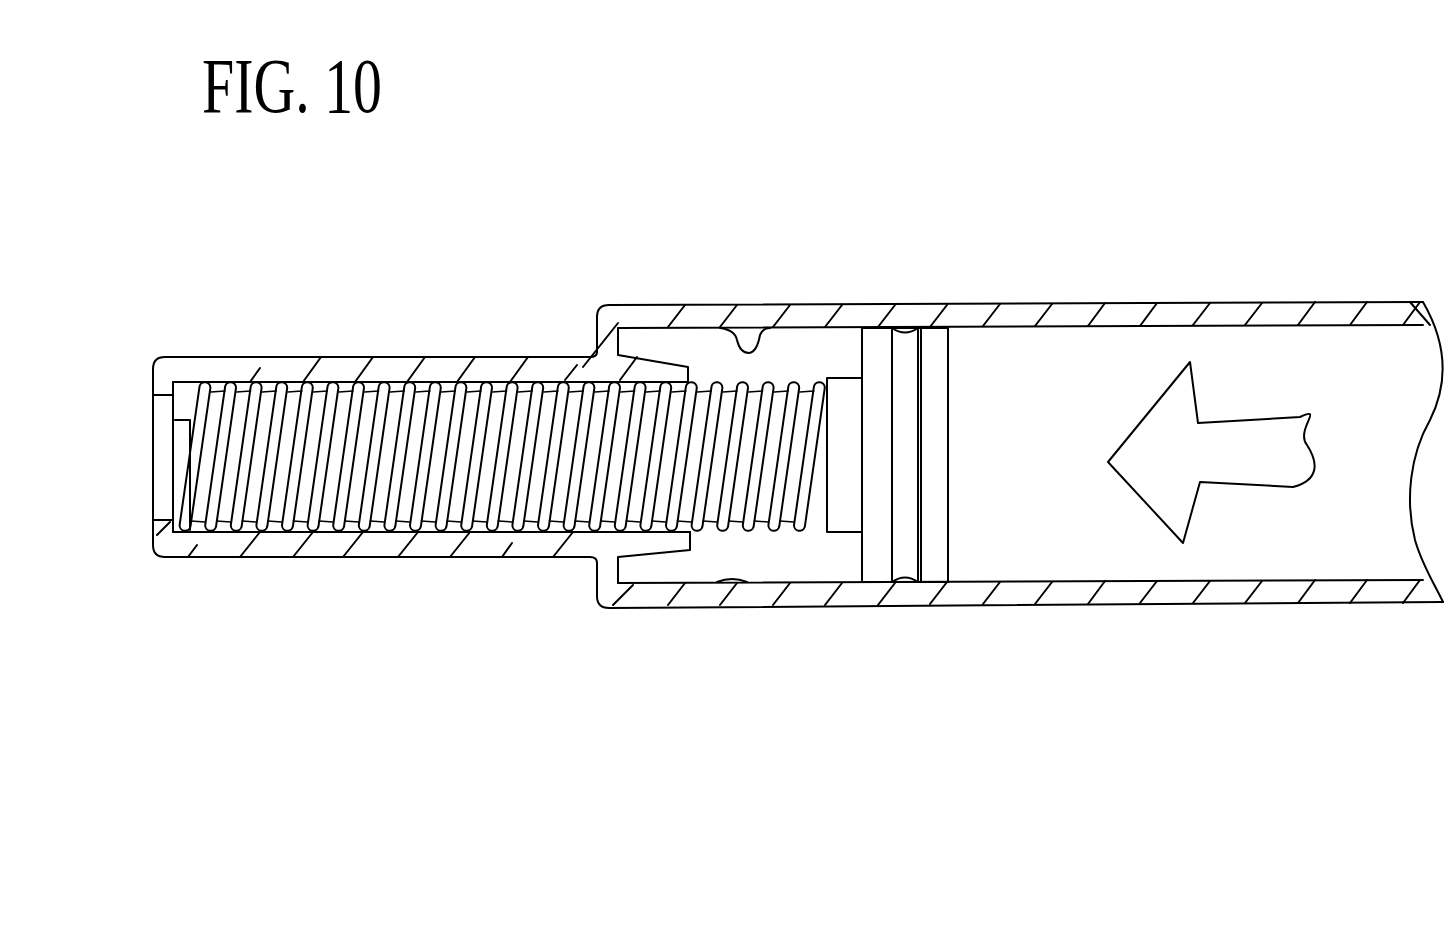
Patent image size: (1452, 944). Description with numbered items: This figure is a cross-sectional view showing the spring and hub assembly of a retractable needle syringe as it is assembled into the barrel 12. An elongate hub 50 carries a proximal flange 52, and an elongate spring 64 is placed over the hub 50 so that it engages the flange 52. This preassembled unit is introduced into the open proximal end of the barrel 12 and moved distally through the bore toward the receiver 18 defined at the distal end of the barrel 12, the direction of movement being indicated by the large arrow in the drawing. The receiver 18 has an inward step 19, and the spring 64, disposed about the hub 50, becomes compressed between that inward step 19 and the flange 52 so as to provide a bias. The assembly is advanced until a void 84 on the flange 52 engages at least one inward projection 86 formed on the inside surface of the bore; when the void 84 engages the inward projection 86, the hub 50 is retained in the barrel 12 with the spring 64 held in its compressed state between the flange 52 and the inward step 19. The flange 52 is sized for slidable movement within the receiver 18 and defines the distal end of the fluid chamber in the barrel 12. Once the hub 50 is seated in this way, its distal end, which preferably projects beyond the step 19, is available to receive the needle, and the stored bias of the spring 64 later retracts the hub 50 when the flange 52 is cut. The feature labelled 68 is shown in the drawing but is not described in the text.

The barrel 12 is at (1122, 302).
The receiver 18 is at (368, 357).
The inward step 19 is at (178, 386).
The spring 64 is at (519, 523).
The shoulder 68 is at (637, 347).
The inward projection 86 is at (755, 335).
The hub 50 is at (813, 500).
The proximal flange 52 is at (873, 575).
The void 84 is at (1170, 354).